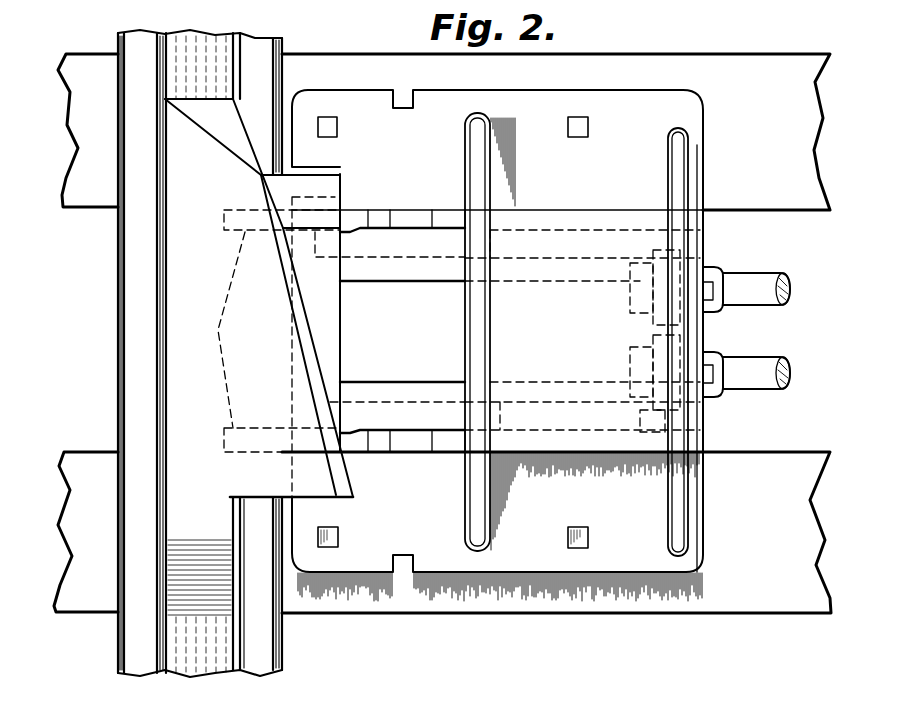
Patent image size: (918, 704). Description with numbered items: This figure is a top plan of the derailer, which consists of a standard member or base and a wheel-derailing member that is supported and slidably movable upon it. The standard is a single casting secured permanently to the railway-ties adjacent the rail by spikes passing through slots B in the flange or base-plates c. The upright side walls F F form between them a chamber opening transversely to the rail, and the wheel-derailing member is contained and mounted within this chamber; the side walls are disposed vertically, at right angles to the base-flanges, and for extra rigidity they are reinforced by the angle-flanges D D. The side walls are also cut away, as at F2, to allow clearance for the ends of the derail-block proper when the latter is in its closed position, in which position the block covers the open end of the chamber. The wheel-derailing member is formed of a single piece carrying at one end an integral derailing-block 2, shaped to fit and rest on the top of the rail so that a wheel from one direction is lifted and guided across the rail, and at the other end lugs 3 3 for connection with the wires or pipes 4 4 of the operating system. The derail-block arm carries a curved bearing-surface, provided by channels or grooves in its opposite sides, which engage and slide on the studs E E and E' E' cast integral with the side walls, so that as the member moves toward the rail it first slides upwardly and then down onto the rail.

The derailing-block 2 is at (200, 353).
The lugs 3 is at (632, 290).
The wires or pipes 4 is at (770, 372).
The slots B is at (409, 114).
The flange or base-plates c is at (712, 119).
The angle-flanges D is at (498, 139).
The studs E is at (582, 303).
The studs E' is at (635, 295).
The side walls F is at (259, 298).
The cut-away portion of side walls F2 is at (423, 212).